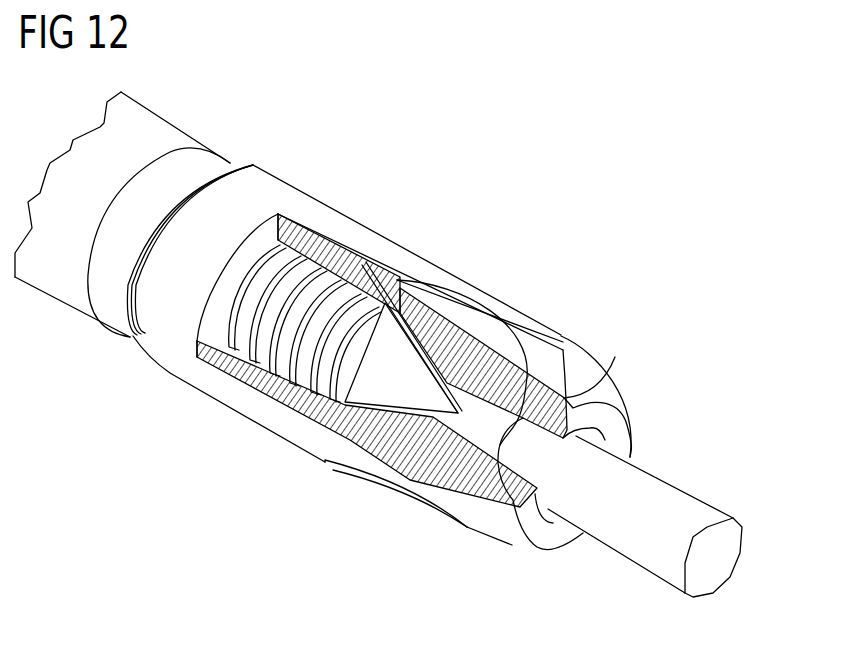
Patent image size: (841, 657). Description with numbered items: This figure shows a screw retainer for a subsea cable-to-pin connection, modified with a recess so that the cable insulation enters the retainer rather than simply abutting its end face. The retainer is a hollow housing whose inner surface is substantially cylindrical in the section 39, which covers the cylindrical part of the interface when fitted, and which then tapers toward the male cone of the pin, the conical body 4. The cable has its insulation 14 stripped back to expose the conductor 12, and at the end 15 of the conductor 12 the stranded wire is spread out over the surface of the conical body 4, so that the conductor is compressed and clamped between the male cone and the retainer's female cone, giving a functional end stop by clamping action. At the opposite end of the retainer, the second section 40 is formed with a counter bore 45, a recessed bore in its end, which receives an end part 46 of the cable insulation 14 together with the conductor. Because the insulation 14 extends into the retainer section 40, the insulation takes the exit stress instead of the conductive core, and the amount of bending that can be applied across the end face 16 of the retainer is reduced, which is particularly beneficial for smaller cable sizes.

The section 39 is at (355, 207).
The conical body 4 is at (449, 290).
The conductor 12 is at (473, 417).
The second section 40 is at (565, 322).
The counter bore 45 is at (605, 372).
The insulation 14 is at (667, 495).
The end of the conductor 15 is at (388, 420).
The end part of the cable insulation 46 is at (520, 467).
The end stop 16 is at (543, 533).